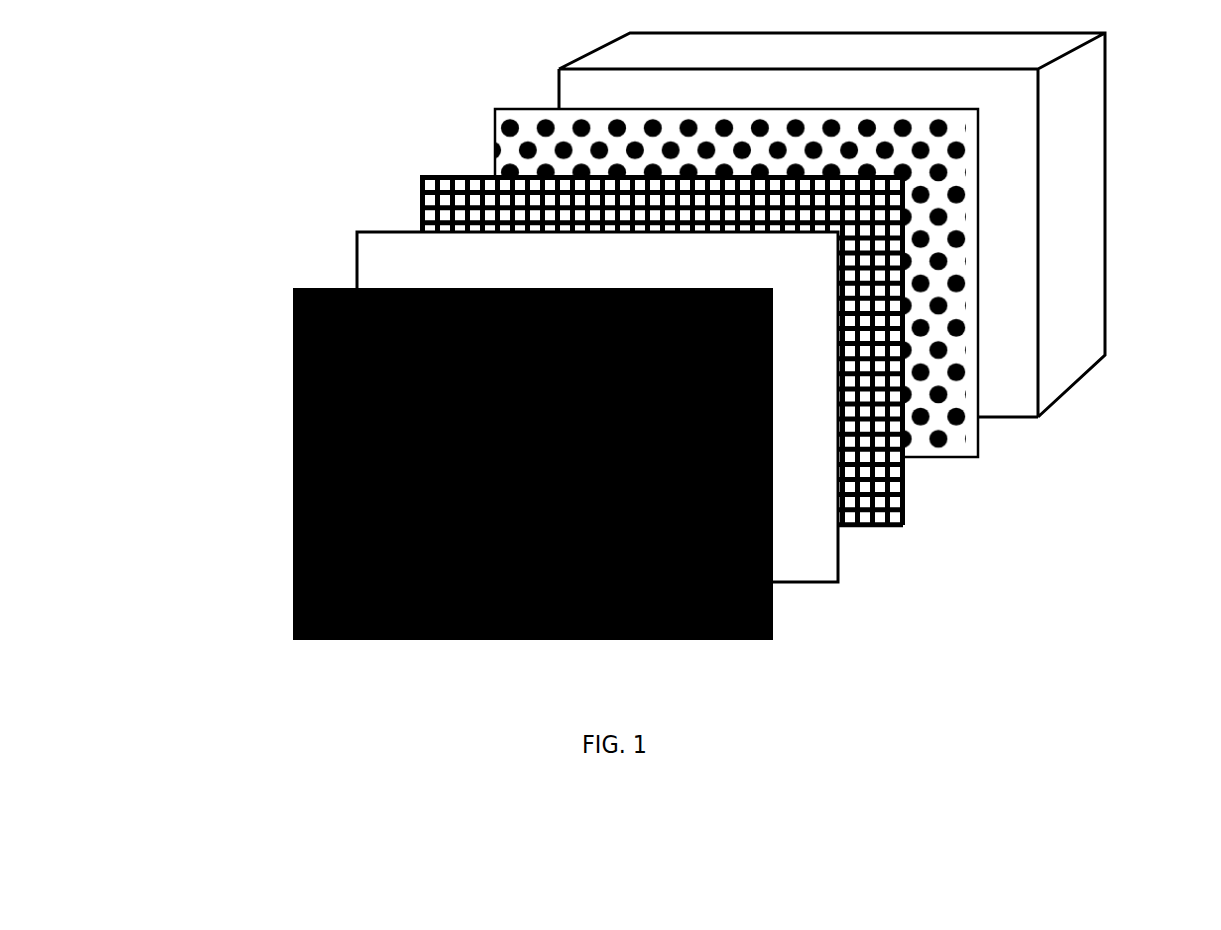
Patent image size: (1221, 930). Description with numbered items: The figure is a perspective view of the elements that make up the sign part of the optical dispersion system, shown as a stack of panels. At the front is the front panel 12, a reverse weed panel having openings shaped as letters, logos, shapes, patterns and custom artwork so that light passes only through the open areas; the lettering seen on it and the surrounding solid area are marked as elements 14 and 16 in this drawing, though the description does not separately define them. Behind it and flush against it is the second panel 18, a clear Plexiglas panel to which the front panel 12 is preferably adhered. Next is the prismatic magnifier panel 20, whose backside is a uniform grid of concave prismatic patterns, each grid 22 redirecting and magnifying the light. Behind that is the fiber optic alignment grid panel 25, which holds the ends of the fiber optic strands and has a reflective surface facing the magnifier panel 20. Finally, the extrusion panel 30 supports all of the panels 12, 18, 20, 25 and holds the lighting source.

The front panel 12 is at (773, 640).
The indicia (letters, logos, shapes, patterns, images) 14 is at (293, 340).
The background of display layer 16 is at (293, 484).
The second panel 18 is at (838, 582).
The prismatic magnifier panel 20 is at (903, 526).
The grid 22 is at (903, 492).
The fiber optic alignment grid panel 25 is at (978, 457).
The extrusion panel 30 is at (1090, 358).